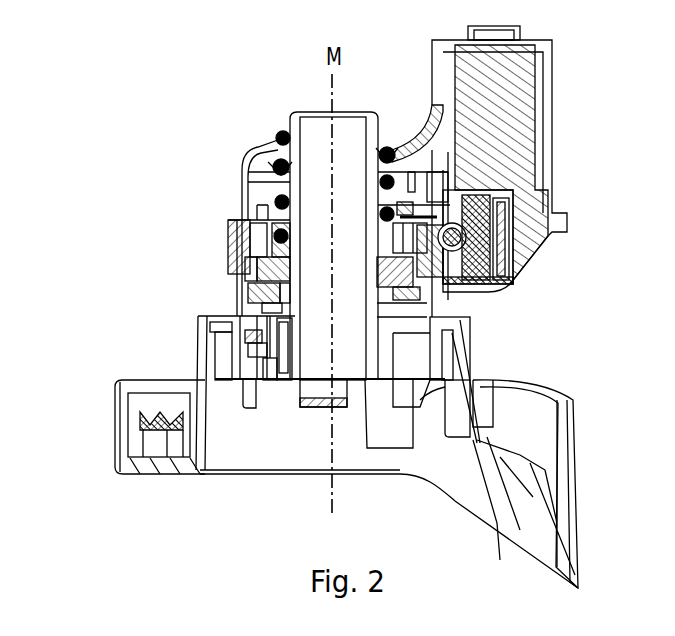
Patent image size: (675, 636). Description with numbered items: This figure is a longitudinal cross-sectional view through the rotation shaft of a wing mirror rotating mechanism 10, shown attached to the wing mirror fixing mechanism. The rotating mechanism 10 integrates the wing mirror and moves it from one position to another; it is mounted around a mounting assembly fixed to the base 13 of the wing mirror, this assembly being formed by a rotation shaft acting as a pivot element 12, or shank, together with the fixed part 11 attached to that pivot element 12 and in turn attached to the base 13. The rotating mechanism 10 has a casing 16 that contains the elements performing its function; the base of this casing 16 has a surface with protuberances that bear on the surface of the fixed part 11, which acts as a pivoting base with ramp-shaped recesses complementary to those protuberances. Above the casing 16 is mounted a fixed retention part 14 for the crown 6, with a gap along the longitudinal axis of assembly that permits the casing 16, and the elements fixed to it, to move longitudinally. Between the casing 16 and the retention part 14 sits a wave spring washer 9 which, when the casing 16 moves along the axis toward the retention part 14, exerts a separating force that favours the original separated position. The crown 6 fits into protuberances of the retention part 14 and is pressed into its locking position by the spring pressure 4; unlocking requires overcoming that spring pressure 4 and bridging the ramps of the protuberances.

The rotating mechanism 10 is at (207, 100).
The spring pressure 4 is at (284, 126).
The pivot element 12 is at (308, 193).
The crown 6 is at (234, 218).
The casing 16 is at (234, 258).
The wave spring washer 9 is at (237, 283).
The fixed part 11 is at (200, 312).
The retention part 14 is at (500, 292).
The base 13 is at (470, 322).